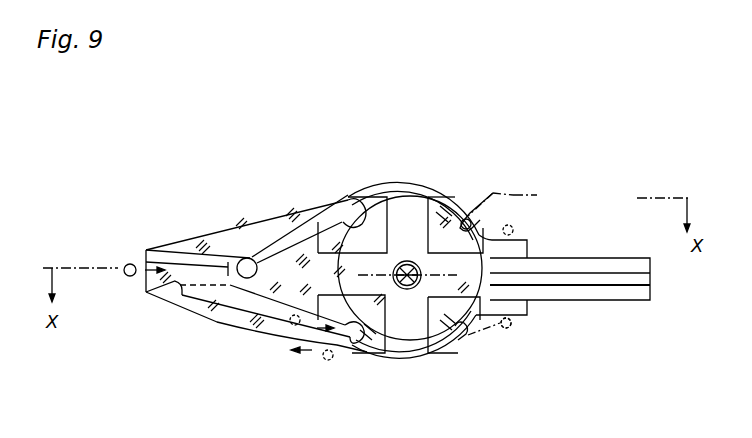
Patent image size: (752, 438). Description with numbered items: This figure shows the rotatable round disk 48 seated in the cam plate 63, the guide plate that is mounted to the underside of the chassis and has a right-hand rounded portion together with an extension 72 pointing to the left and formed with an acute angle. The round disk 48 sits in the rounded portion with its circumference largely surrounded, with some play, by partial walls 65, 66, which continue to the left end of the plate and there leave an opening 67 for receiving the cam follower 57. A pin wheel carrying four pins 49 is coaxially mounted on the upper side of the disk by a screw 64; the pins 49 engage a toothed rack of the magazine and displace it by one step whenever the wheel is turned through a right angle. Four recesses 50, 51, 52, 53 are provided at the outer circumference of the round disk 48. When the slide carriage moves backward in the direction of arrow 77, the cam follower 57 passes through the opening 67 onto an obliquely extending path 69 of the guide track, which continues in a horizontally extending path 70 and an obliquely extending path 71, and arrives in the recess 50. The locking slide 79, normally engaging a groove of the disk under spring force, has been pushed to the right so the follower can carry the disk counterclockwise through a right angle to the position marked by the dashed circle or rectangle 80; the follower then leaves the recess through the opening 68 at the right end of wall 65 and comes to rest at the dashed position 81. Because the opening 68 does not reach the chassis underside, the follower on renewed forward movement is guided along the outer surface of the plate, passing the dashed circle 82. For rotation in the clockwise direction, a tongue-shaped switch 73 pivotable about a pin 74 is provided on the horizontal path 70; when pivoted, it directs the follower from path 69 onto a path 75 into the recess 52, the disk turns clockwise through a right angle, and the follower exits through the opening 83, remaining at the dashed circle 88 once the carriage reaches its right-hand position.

The round disk 48 is at (395, 253).
The pins 49 is at (437, 215).
The recess 50 is at (367, 350).
The recess 51 is at (452, 343).
The recess 52 is at (353, 217).
The recess 53 is at (470, 229).
The cam follower 57 is at (130, 263).
The cam plate 63 is at (282, 352).
The screw 64 is at (422, 277).
The partial wall 65 is at (402, 363).
The partial wall 66 is at (383, 192).
The opening 67 is at (145, 280).
The opening 68 is at (463, 338).
The obliquely extending path 69 is at (160, 283).
The horizontally extending path 70 is at (185, 297).
The obliquely extending path 71 is at (280, 313).
The extension 72 is at (215, 320).
The switch 73 is at (217, 270).
The pin 74 is at (247, 258).
The path 75 is at (292, 228).
The arrow 77 is at (312, 323).
The locking slide 79 is at (593, 293).
The circle or rectangle in dashed lines 80 is at (507, 329).
The circle and rectangle in dashed lines 81 is at (510, 325).
The circle in dashed lines 82 is at (331, 360).
The opening 83 is at (468, 222).
The circle in dashed lines 88 is at (514, 230).